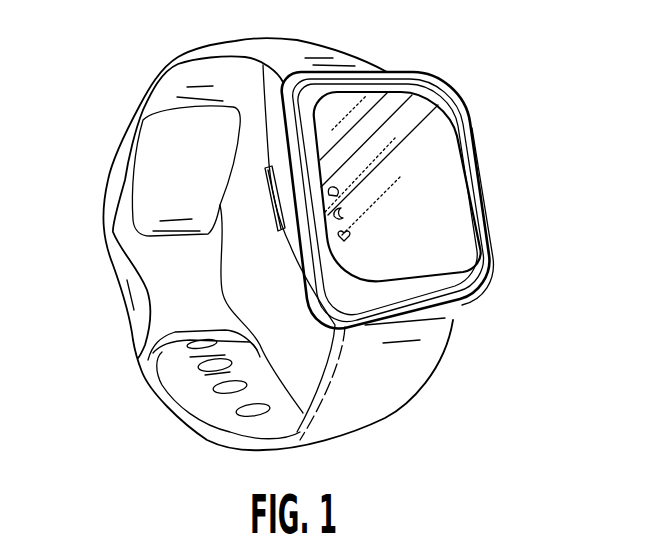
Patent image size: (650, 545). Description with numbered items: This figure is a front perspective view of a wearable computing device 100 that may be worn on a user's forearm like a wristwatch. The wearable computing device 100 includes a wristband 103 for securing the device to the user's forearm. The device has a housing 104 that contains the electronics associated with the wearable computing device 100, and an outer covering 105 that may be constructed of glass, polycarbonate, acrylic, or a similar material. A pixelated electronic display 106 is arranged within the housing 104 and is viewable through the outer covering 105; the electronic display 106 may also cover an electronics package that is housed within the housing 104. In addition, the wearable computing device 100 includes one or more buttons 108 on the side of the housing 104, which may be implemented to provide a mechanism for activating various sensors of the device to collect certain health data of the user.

The wearable computing device 100 is at (308, 233).
The wristband 103 is at (387, 380).
The housing 104 is at (413, 87).
The outer covering 105 is at (447, 207).
The pixelated electronic display 106 is at (442, 171).
The buttons 108 is at (272, 203).